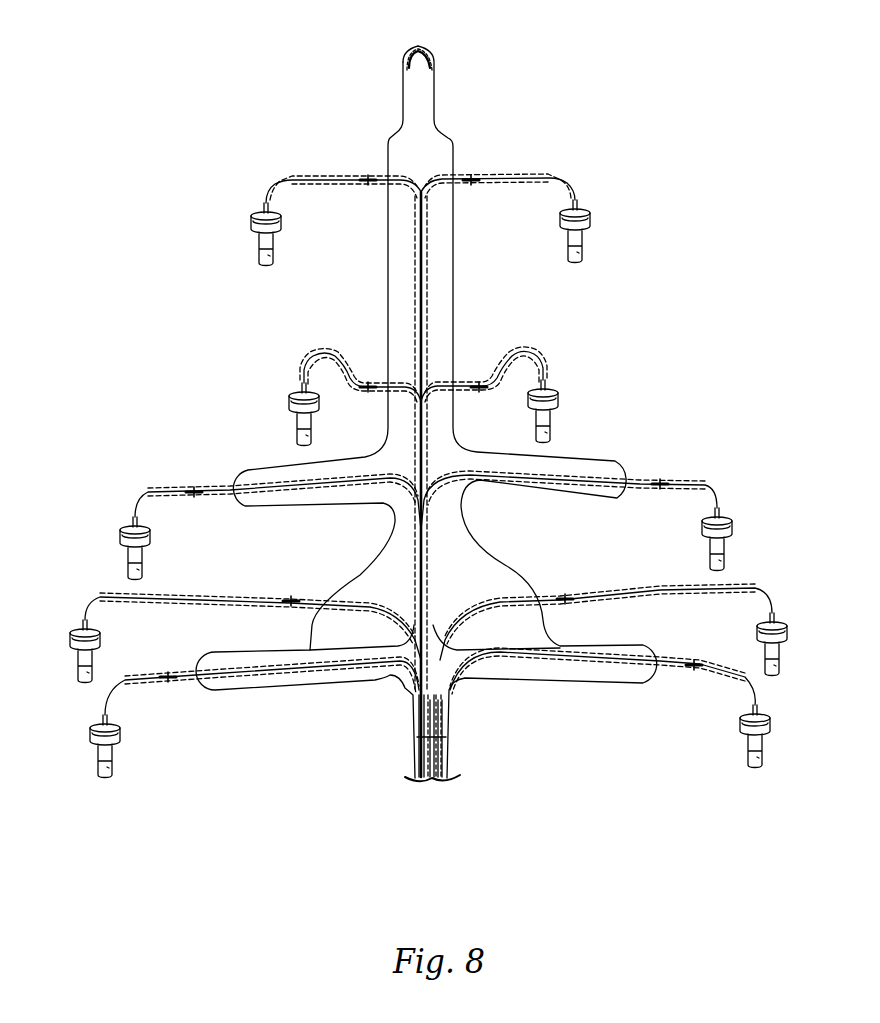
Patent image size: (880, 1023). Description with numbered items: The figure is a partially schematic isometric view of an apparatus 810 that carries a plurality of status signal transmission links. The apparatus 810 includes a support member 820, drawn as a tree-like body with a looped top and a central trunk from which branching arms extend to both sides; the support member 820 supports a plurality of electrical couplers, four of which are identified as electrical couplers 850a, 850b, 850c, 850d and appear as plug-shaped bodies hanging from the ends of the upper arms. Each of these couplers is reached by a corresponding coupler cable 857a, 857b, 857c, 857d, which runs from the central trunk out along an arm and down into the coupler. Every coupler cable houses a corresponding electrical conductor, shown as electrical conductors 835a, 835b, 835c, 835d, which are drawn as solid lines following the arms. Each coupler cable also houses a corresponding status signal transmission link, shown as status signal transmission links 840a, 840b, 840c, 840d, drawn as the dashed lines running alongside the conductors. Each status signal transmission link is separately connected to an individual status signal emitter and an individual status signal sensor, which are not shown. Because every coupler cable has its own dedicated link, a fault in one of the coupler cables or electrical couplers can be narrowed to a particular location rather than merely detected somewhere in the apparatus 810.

The apparatus 810 is at (688, 231).
The support member 820 is at (430, 56).
The electrical conductor 835a is at (522, 348).
The electrical conductor 835b is at (565, 182).
The electrical conductor 835c is at (281, 180).
The electrical conductor 835d is at (315, 355).
The status signal transmission link 840a is at (502, 365).
The status signal transmission link 840b is at (507, 177).
The status signal transmission link 840c is at (307, 177).
The status signal transmission link 840d is at (337, 357).
The electrical coupler 850a is at (557, 399).
The electrical coupler 850b is at (588, 238).
The electrical coupler 850c is at (255, 243).
The electrical coupler 850d is at (295, 419).
The coupler cable 857a is at (546, 381).
The coupler cable 857b is at (589, 217).
The coupler cable 857c is at (264, 210).
The coupler cable 857d is at (302, 393).